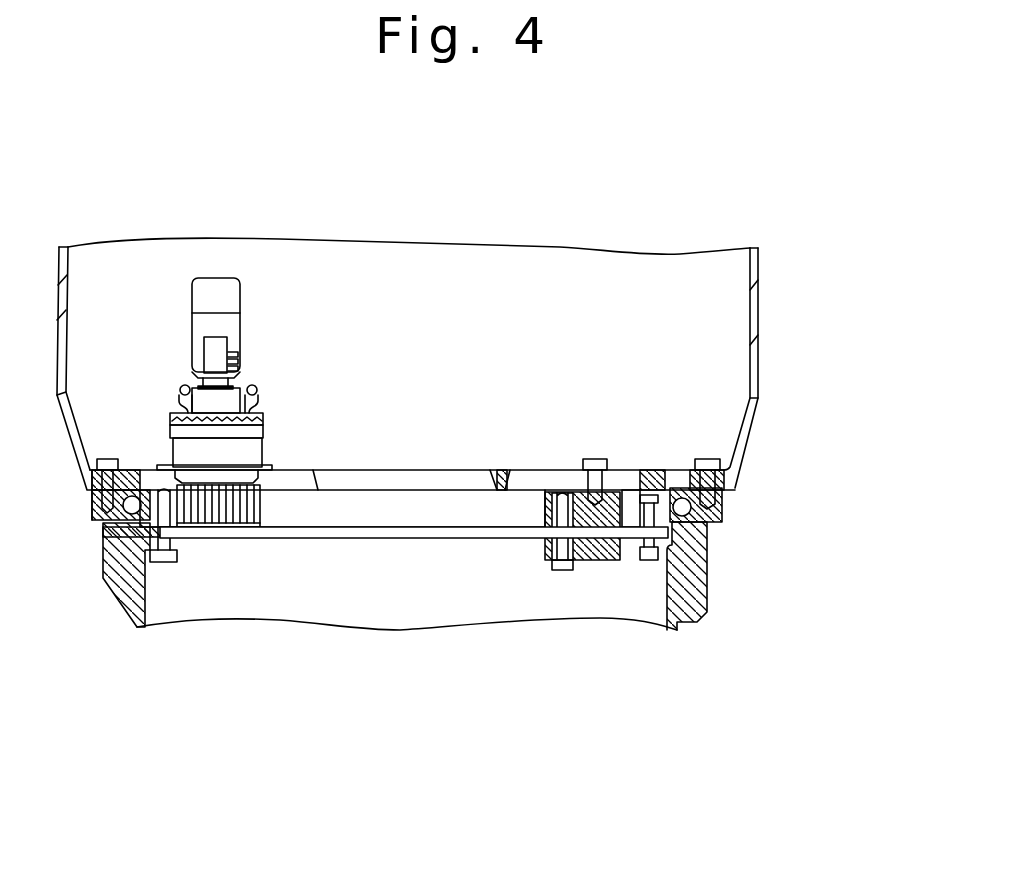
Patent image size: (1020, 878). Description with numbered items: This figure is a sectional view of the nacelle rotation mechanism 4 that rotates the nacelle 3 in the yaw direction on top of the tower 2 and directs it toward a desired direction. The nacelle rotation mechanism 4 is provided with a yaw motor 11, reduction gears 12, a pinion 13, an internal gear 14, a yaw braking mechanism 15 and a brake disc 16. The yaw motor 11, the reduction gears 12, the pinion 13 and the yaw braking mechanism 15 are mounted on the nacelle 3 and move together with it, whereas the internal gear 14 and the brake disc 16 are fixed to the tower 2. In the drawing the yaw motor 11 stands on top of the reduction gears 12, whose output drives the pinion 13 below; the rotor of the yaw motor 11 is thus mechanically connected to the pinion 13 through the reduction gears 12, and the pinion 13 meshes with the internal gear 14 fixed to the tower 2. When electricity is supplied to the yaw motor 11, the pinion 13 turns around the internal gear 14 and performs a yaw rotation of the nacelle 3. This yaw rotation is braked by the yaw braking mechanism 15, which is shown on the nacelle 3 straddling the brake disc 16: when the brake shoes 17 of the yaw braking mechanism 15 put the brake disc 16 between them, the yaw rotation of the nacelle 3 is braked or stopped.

The tower 2 is at (700, 597).
The nacelle 3 is at (759, 297).
The nacelle rotation mechanism 4 is at (758, 552).
The yaw motor 11 is at (232, 328).
The reduction gears 12 is at (255, 452).
The pinion 13 is at (213, 515).
The internal gear 14 is at (125, 527).
The yaw braking mechanism 15 is at (479, 629).
The brake disc 16 is at (625, 540).
The brake shoes 17 is at (593, 553).